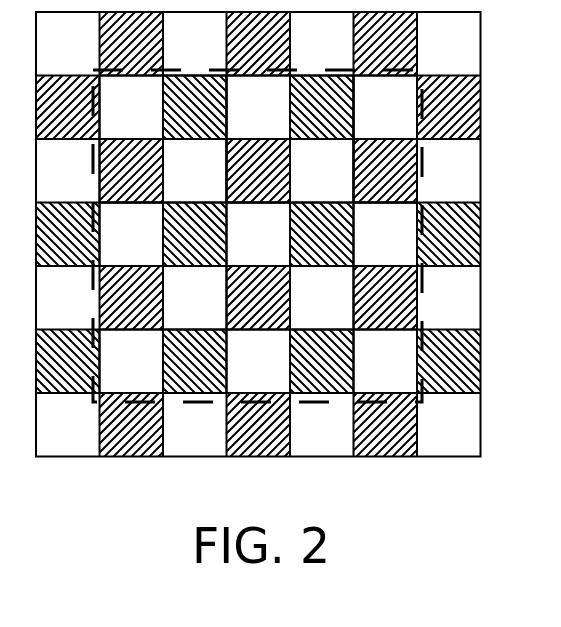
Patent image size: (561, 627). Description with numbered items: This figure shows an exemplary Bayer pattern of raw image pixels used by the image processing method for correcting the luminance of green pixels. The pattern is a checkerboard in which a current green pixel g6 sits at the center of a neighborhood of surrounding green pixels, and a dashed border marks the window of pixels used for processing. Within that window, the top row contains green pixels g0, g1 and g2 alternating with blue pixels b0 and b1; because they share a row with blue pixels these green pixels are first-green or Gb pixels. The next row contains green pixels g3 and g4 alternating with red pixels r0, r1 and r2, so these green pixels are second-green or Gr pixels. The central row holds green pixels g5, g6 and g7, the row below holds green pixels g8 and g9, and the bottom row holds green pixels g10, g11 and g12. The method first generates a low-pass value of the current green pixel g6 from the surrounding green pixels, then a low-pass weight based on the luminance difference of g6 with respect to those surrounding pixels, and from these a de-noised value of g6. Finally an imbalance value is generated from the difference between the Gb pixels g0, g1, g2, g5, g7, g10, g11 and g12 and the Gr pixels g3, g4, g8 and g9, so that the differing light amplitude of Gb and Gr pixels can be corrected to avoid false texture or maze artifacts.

The green pixel g0 is at (132, 108).
The blue pixel b0 is at (195, 108).
The green pixel g1 is at (259, 108).
The blue pixel b1 is at (322, 108).
The green pixel g2 is at (386, 108).
The red pixel r0 is at (132, 171).
The green pixel g3 is at (195, 171).
The red pixel r1 is at (259, 171).
The green pixel g4 is at (322, 171).
The red pixel r2 is at (386, 171).
The green pixel g5 is at (132, 235).
The current green pixel g6 is at (259, 235).
The green pixel g7 is at (386, 235).
The green pixel g8 is at (195, 298).
The green pixel g9 is at (322, 298).
The green pixel g10 is at (132, 362).
The green pixel g11 is at (259, 362).
The green pixel g12 is at (386, 362).